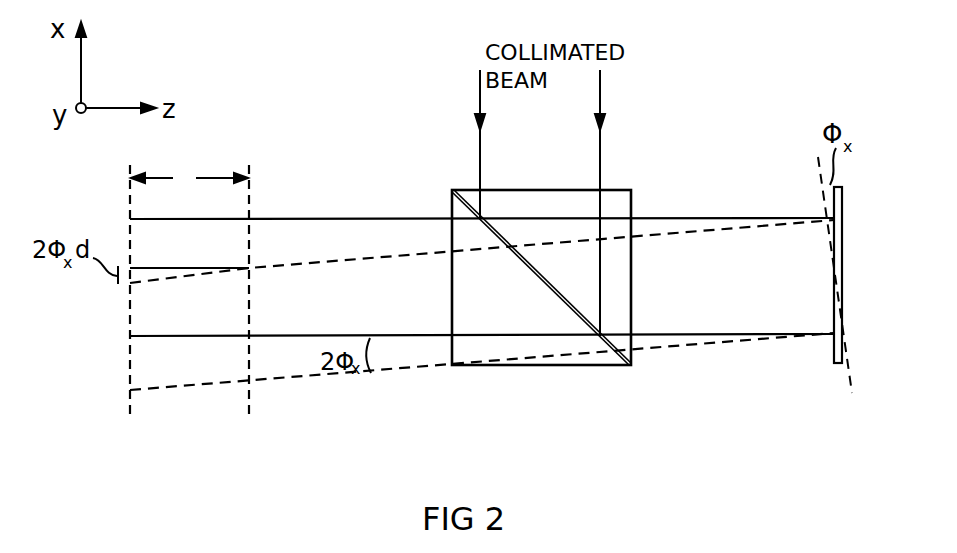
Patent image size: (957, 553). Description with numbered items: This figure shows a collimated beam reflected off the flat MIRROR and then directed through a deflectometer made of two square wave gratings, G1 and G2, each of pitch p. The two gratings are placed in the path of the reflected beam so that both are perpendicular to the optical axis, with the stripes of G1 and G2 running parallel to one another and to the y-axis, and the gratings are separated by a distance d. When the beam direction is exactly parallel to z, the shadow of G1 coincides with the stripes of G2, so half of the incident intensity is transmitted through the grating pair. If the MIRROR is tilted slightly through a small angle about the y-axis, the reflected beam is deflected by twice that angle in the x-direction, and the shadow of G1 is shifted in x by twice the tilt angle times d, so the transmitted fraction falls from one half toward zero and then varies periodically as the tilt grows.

The square wave grating G1 is at (252, 311).
The square wave grating G2 is at (135, 311).
The grating separation distance d is at (189, 181).
The flat mirror MIRROR is at (848, 294).